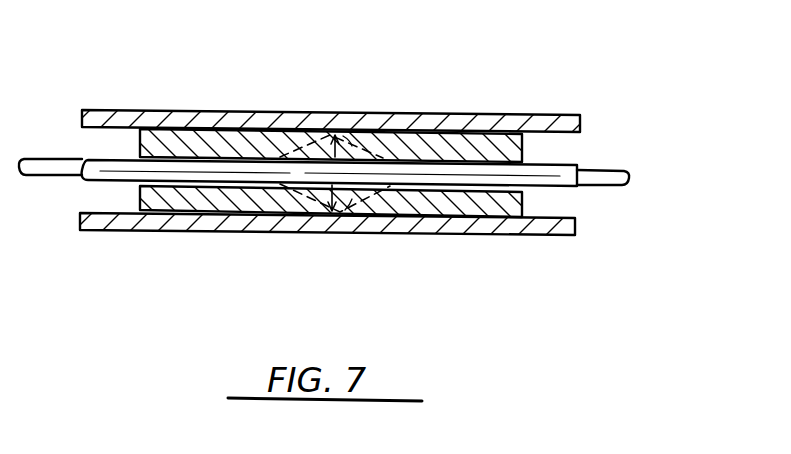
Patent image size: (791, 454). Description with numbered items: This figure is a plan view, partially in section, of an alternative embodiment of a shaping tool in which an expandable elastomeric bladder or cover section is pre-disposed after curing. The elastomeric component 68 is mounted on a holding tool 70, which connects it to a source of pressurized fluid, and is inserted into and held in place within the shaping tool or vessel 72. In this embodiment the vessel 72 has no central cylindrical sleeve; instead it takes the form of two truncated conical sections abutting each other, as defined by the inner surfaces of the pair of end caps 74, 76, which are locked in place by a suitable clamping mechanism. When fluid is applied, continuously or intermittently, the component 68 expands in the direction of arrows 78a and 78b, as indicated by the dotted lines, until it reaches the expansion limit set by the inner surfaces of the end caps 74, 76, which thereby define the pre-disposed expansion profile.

The elastomeric component 68 is at (100, 167).
The holding tool 70 is at (597, 160).
The shaping tool or vessel 72 is at (528, 122).
The end cap 74 is at (137, 196).
The end cap 76 is at (528, 146).
The arrow 78a is at (380, 120).
The arrow 78b is at (320, 193).